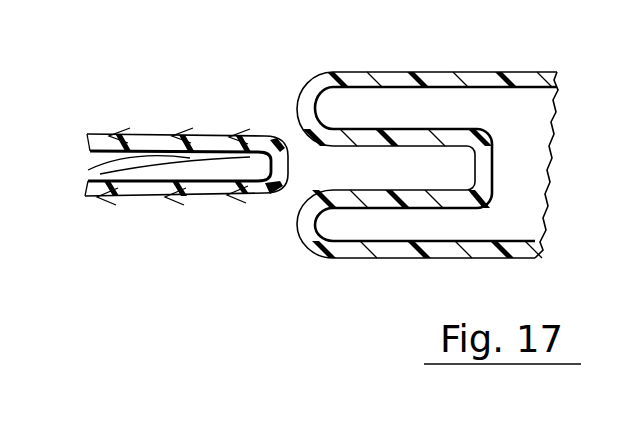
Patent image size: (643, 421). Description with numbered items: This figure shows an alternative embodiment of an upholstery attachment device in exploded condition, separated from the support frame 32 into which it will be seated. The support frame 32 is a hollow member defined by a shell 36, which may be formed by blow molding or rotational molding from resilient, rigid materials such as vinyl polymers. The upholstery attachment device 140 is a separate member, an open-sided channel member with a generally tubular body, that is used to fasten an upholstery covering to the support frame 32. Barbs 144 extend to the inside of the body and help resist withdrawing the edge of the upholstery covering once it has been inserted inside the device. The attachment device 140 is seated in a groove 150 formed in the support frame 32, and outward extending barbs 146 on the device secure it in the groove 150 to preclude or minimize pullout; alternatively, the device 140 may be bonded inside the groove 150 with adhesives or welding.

The support frame 32 is at (540, 55).
The shell 36 is at (547, 171).
The upholstery attachment device 140 is at (169, 156).
The barbs 144 is at (113, 151).
The outward extending barbs 146 is at (233, 135).
The groove 150 is at (313, 177).